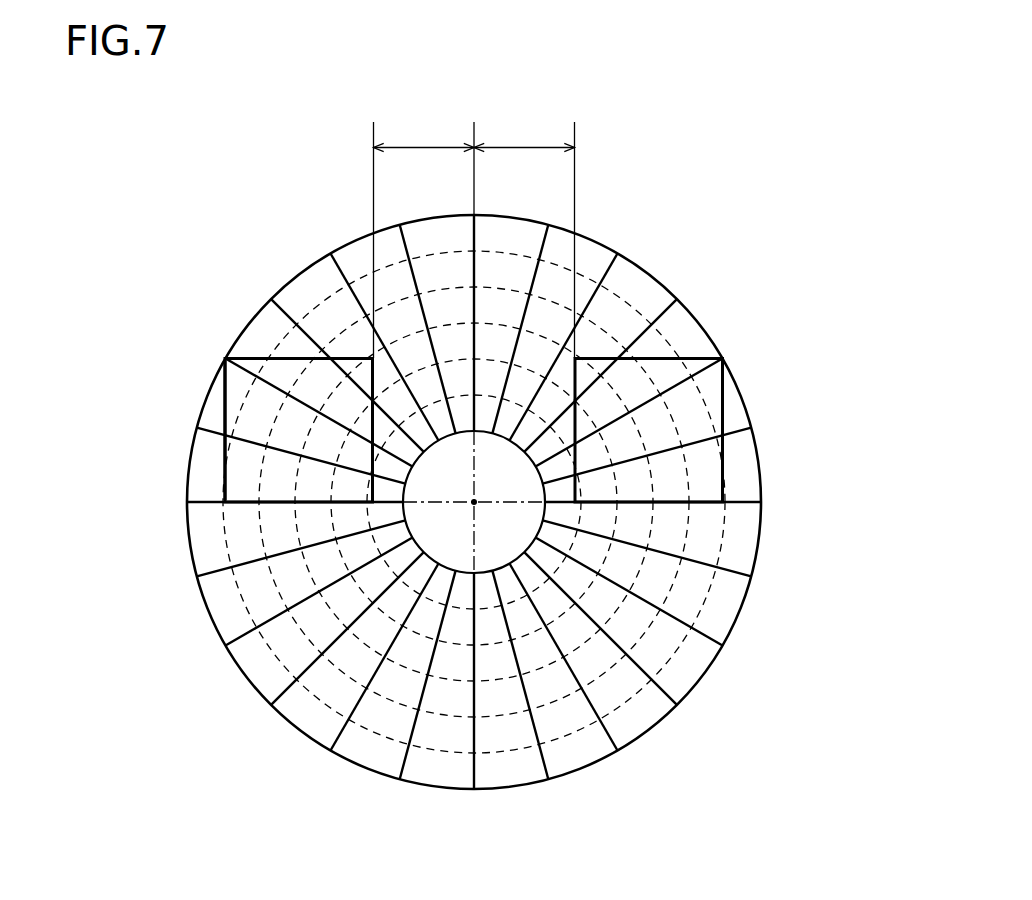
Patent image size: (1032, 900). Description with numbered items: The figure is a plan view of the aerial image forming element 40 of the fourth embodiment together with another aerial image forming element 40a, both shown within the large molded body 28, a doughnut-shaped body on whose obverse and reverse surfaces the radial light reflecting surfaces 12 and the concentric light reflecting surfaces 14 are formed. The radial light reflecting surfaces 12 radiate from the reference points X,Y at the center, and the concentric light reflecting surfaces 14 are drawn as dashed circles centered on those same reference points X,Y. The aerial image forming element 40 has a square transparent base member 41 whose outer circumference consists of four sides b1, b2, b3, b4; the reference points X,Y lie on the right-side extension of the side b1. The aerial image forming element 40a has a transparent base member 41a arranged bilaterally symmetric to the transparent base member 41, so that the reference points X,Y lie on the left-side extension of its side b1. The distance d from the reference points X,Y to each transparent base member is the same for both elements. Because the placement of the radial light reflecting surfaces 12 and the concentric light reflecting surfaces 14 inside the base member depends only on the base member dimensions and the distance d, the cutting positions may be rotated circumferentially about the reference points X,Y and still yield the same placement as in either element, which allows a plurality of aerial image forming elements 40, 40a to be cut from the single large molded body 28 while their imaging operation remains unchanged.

The radial light reflecting surfaces 12 is at (288, 318).
The concentric light reflecting surfaces 14 is at (712, 590).
The large molded body 28 is at (708, 683).
The aerial image forming element 40 is at (173, 323).
The aerial image forming element 40a is at (769, 334).
The transparent base member 41 is at (223, 407).
The transparent base member 41a is at (728, 414).
The side b1 is at (243, 503).
The side b2 is at (407, 357).
The side b3 is at (288, 357).
The side b4 is at (224, 457).
The distance d is at (474, 231).
The reference points X,Y is at (476, 505).